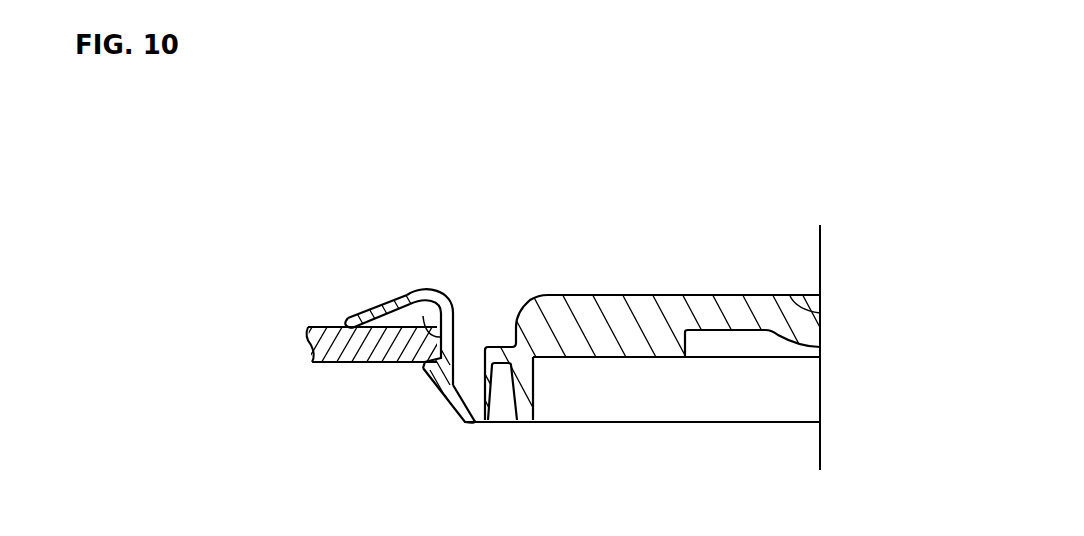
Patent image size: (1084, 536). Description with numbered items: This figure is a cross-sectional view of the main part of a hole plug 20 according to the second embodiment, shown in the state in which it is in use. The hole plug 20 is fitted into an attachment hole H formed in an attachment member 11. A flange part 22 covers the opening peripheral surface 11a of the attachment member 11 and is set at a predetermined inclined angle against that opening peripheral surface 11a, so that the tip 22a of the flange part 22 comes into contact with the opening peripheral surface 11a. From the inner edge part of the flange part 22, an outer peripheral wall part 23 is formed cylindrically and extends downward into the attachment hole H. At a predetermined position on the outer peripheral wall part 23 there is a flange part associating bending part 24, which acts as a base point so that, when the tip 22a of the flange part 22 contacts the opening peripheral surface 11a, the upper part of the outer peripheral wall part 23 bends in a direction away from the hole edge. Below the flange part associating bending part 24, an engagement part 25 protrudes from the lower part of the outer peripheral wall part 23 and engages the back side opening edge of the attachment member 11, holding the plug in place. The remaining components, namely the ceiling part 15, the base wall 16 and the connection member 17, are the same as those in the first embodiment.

The hole plug 20 is at (645, 76).
The ceiling part 15 is at (710, 295).
The base wall 16 is at (528, 408).
The connection member 17 is at (497, 423).
The attachment member 11 is at (343, 363).
The opening peripheral surface 11a is at (316, 322).
The flange part 22 is at (373, 308).
The tip of the flange part 22a is at (347, 327).
The outer peripheral wall part 23 is at (437, 296).
The flange part associating bending part 24 is at (447, 328).
The engagement part 25 is at (430, 378).
The attachment hole H is at (445, 342).